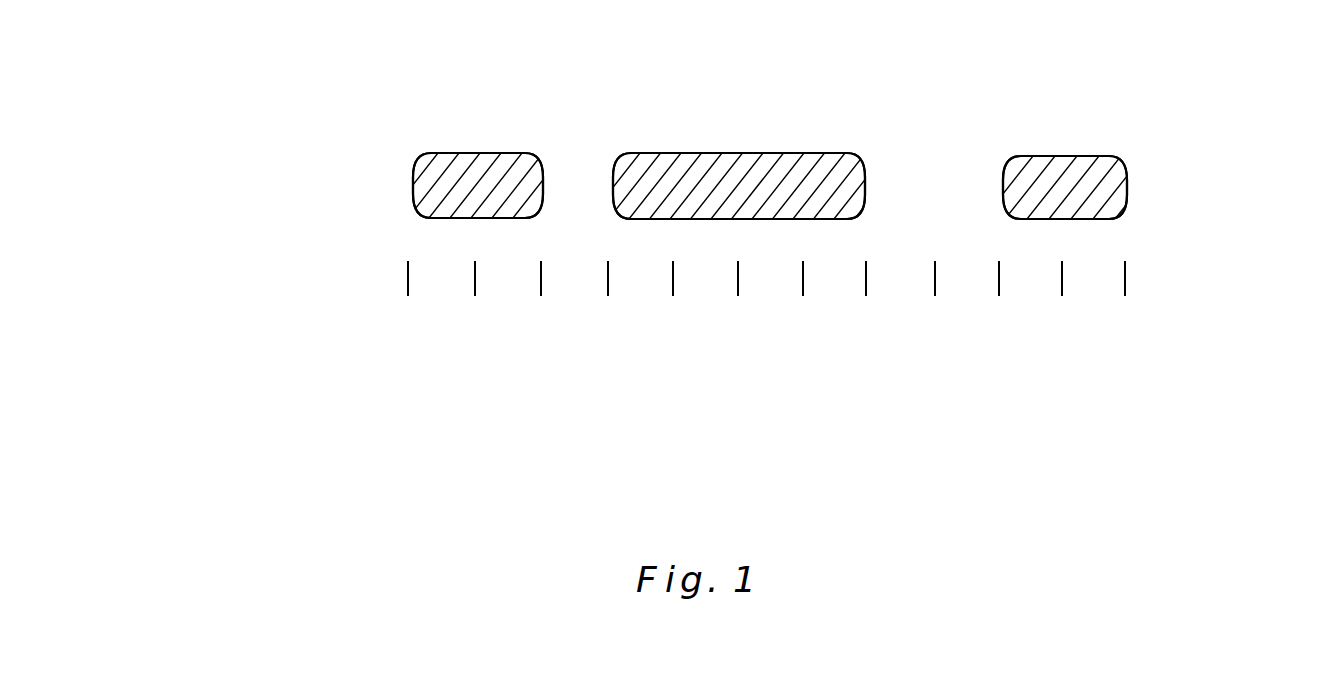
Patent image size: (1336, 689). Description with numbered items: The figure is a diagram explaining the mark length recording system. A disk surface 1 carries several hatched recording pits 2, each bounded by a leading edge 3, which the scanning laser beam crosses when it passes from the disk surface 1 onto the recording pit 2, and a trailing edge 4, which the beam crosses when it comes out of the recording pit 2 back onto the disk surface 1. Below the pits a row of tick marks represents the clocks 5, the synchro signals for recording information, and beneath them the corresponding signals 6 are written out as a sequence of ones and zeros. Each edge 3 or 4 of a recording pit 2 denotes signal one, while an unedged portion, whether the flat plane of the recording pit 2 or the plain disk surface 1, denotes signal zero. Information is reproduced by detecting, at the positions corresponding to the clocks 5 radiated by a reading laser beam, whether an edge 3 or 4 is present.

The disk surface 1 is at (247, 213).
The recording pit 2 is at (497, 155).
The edge 3 is at (699, 150).
The edge 4 is at (842, 134).
The clocks 5 is at (1131, 277).
The signals 6 is at (1137, 348).